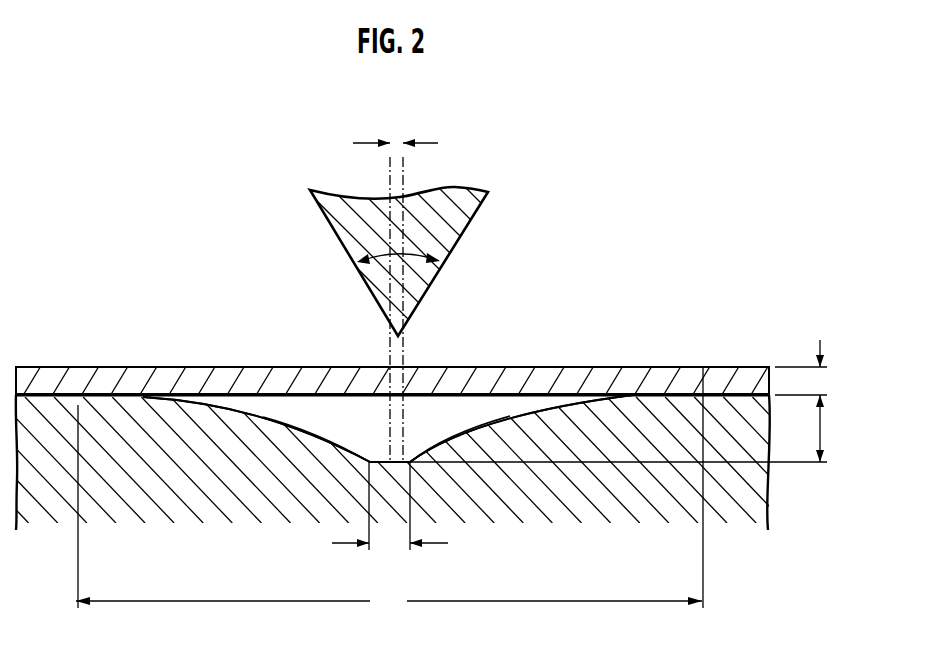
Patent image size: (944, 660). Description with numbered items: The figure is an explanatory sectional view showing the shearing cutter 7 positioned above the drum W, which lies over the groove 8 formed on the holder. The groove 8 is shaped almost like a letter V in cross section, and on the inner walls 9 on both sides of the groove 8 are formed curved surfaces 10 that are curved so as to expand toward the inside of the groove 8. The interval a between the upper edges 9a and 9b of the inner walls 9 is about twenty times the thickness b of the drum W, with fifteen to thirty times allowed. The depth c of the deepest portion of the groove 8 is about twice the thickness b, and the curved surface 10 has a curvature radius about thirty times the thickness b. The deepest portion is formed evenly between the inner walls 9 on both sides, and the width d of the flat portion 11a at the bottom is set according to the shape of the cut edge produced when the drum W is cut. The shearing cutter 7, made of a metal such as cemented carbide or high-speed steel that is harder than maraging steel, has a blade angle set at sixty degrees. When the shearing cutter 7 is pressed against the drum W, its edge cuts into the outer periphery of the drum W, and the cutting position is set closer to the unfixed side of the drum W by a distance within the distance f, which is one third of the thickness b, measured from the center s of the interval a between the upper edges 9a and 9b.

The shearing cutter 7 is at (460, 237).
The groove 8 is at (496, 403).
The inner wall 9 is at (262, 416).
The upper edge 9a is at (79, 367).
The upper edge 9b is at (703, 367).
The curved surface 10 is at (303, 420).
The flat portion 11a is at (374, 451).
The drum W is at (157, 367).
The distance f is at (395, 129).
The center s is at (390, 338).
The interval a is at (389, 602).
The thickness b is at (807, 368).
The depth c is at (624, 428).
The width d is at (390, 508).